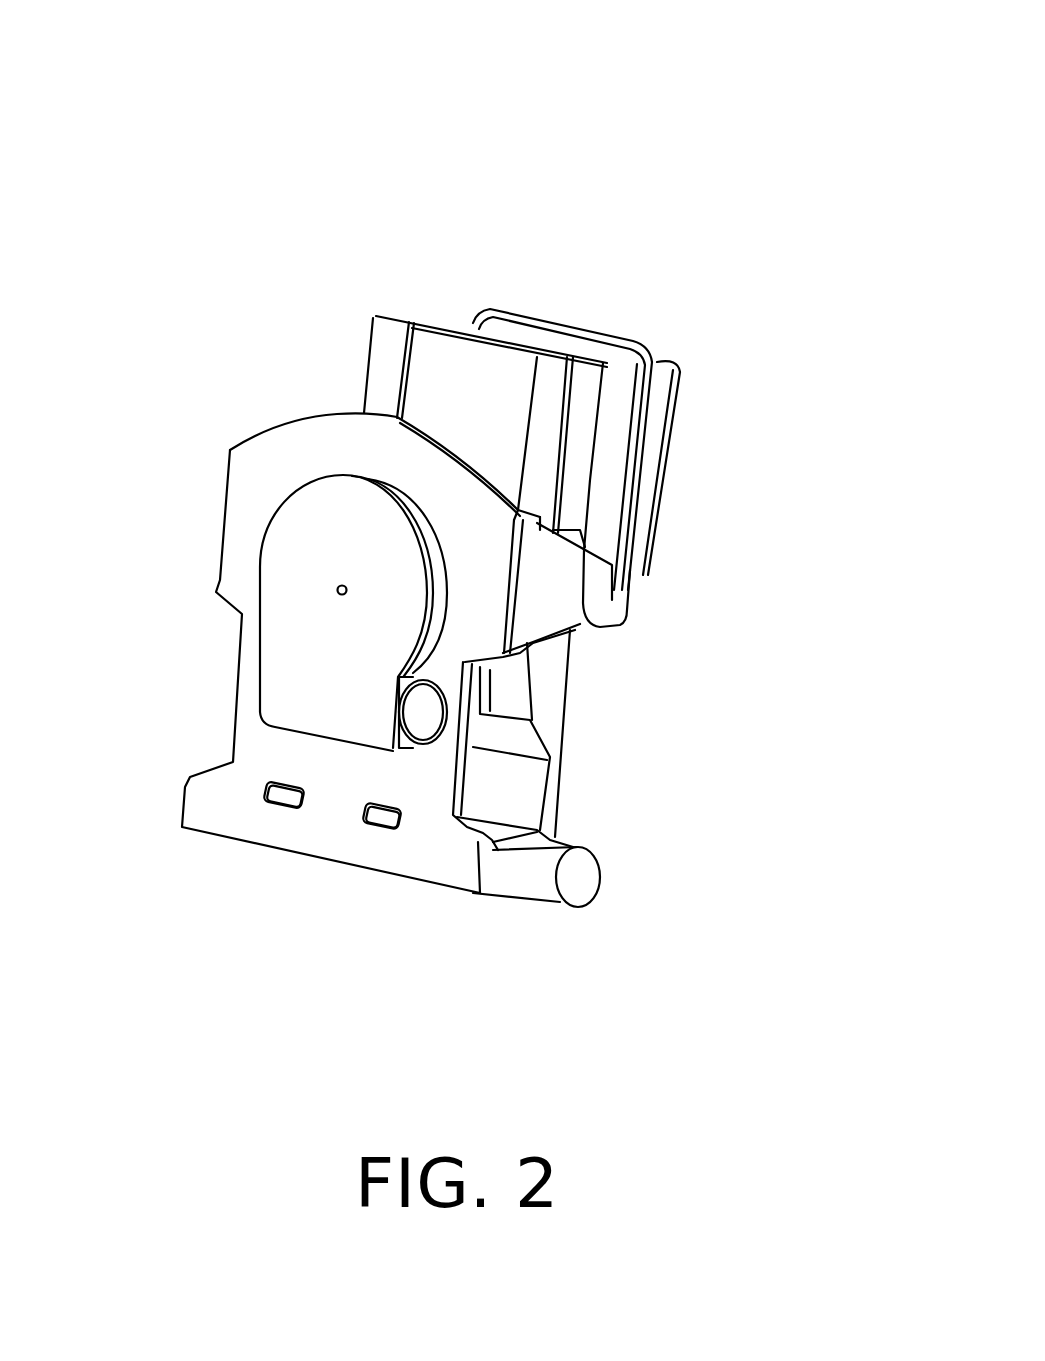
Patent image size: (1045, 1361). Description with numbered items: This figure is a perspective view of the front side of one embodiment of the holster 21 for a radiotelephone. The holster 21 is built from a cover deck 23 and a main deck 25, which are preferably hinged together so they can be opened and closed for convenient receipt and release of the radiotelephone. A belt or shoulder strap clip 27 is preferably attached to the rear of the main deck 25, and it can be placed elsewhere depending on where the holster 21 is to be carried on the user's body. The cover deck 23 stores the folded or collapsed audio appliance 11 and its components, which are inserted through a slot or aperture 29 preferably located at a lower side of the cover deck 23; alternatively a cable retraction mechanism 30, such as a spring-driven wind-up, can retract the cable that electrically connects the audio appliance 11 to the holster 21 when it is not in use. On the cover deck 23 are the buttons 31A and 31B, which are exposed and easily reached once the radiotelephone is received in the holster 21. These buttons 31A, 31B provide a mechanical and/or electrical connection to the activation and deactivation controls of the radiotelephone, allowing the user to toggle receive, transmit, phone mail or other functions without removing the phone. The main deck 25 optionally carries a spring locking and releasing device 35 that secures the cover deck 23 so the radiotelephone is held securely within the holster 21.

The holster 21 is at (673, 127).
The cover deck 23 is at (245, 457).
The main deck 25 is at (387, 343).
The belt or shoulder strap clip 27 is at (677, 360).
The slot or aperture 29 is at (398, 752).
The button 31A is at (270, 803).
The button 31B is at (378, 828).
The spring locking and releasing device 35 is at (620, 580).
The audio appliance 11 is at (453, 728).
The cable retraction mechanism 30 is at (536, 869).